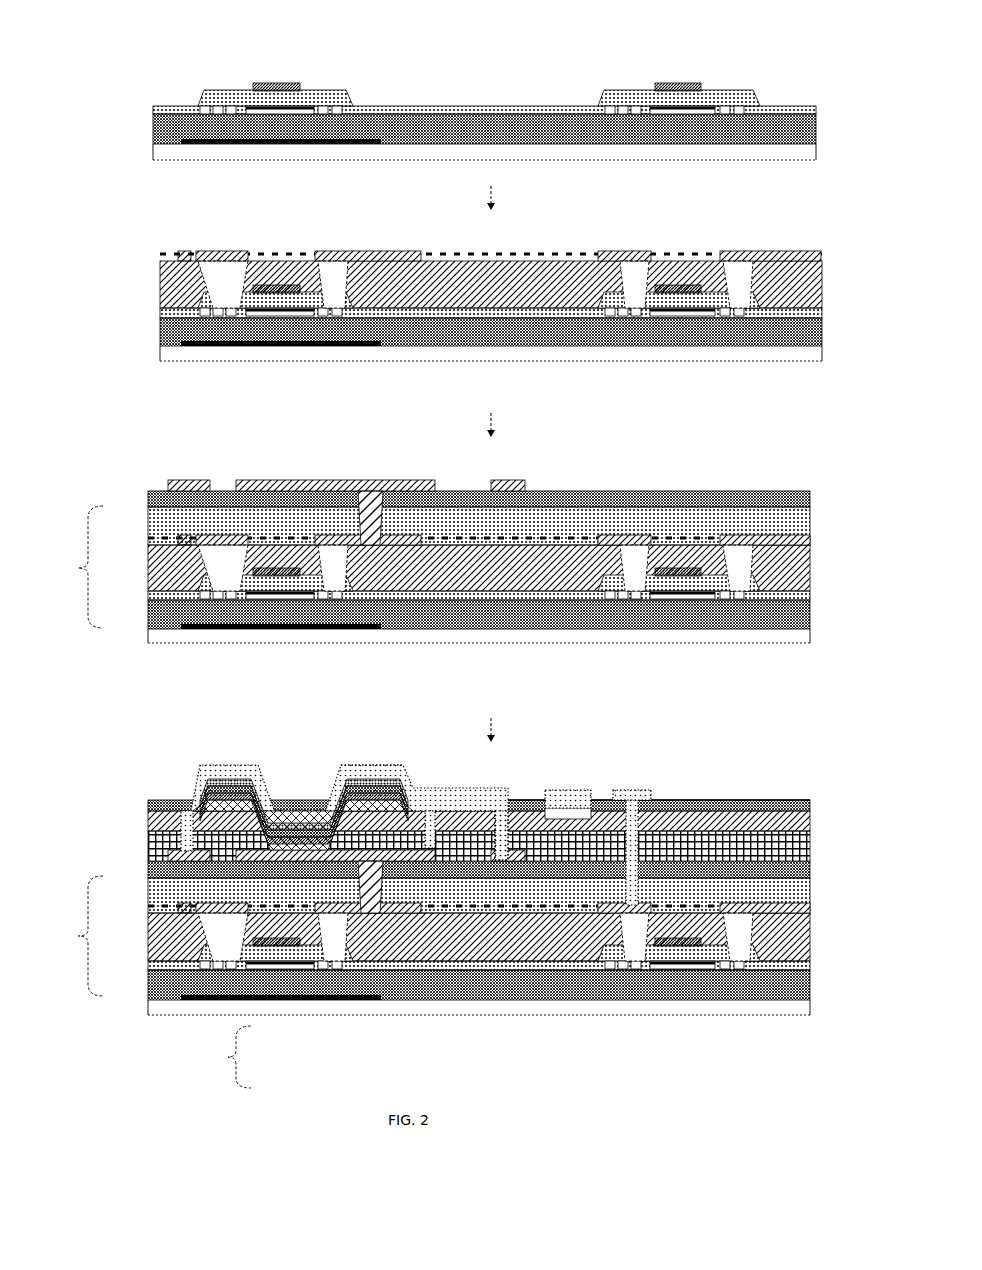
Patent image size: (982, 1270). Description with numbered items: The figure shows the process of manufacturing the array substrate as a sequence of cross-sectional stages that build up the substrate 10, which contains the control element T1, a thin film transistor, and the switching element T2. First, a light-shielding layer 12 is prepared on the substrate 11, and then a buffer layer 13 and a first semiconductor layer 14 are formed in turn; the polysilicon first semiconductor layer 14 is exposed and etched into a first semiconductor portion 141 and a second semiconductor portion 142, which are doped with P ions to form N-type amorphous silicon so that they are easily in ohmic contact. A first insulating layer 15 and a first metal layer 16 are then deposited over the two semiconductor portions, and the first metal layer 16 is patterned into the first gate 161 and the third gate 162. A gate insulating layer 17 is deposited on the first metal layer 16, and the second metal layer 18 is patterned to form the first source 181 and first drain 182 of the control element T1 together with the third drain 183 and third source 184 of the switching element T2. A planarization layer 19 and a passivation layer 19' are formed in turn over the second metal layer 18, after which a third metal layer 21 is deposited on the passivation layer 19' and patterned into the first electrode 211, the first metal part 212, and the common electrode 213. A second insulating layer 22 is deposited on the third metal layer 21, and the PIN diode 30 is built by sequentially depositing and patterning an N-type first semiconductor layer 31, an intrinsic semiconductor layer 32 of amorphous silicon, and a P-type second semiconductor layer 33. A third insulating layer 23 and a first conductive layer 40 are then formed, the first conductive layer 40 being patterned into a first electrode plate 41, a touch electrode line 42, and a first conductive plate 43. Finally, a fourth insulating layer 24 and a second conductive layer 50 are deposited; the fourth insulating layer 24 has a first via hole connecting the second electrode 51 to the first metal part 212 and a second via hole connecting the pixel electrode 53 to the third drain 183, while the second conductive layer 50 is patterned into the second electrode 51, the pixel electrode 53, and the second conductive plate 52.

The substrate 10 is at (78, 751).
The substrate 11 is at (808, 145).
The light-shielding layer 12 is at (170, 122).
The buffer layer 13 is at (808, 120).
The first semiconductor layer 14 is at (175, 98).
The first semiconductor portion 141 is at (190, 97).
The second semiconductor portion 142 is at (597, 100).
The first insulating layer 15 is at (805, 99).
The first metal layer 16 is at (245, 80).
The first gate 161 is at (243, 76).
The third gate 162 is at (650, 76).
The gate insulating layer 17 is at (814, 272).
The second metal layer 18 is at (814, 246).
The first source 181 is at (200, 244).
The first drain 182 is at (320, 244).
The third drain 183 is at (612, 244).
The third source 184 is at (735, 244).
The planarization layer 19 is at (494, 702).
The passivation layer 19' is at (496, 673).
The third metal layer 21 is at (160, 475).
The first electrode 211 is at (318, 457).
The first metal part 212 is at (500, 472).
The common electrode 213 is at (185, 472).
The second insulating layer 22 is at (802, 818).
The third insulating layer 23 is at (802, 800).
The fourth insulating layer 24 is at (760, 793).
The PIN diode 30 is at (227, 1057).
The first semiconductor layer 31 is at (212, 800).
The intrinsic semiconductor layer 32 is at (205, 792).
The second semiconductor layer 33 is at (228, 778).
The first conductive layer 40 is at (186, 800).
The first electrode plate 41 is at (414, 782).
The touch electrode line 42 is at (196, 788).
The first conductive plate 43 is at (550, 782).
The second conductive layer 50 is at (642, 786).
The second electrode 51 is at (362, 758).
The second conductive plate 52 is at (565, 785).
The pixel electrode 53 is at (628, 790).
The control element T1 is at (430, 340).
The switching element T2 is at (530, 340).